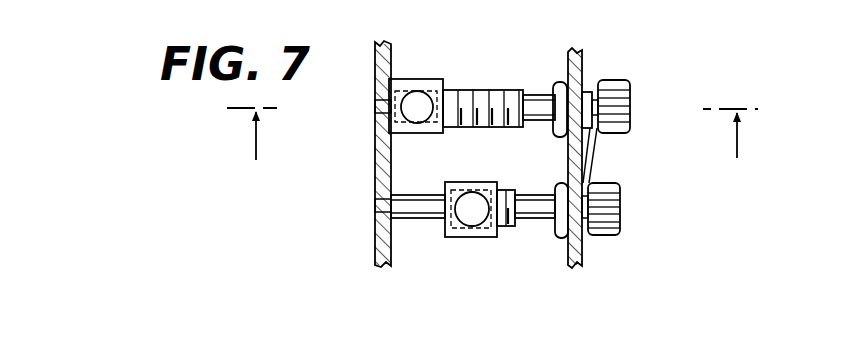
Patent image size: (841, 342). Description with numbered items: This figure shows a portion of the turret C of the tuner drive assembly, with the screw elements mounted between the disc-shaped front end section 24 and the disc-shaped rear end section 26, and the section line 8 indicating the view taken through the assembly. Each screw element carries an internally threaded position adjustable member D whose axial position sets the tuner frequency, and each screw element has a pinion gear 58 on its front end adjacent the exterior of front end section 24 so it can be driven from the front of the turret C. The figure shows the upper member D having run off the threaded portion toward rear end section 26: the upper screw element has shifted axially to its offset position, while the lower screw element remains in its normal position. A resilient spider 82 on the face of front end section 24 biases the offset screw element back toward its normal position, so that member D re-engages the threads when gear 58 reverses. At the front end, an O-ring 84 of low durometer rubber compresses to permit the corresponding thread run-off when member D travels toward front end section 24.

The front end section 24 is at (580, 58).
The rear end section 26 is at (375, 155).
The pinion gear 58 is at (622, 102).
The spider 82 is at (600, 156).
The O-ring 84 is at (557, 82).
The section line 8- 8 is at (492, 152).
The turret C is at (374, 85).
The position adjustable member D is at (417, 77).